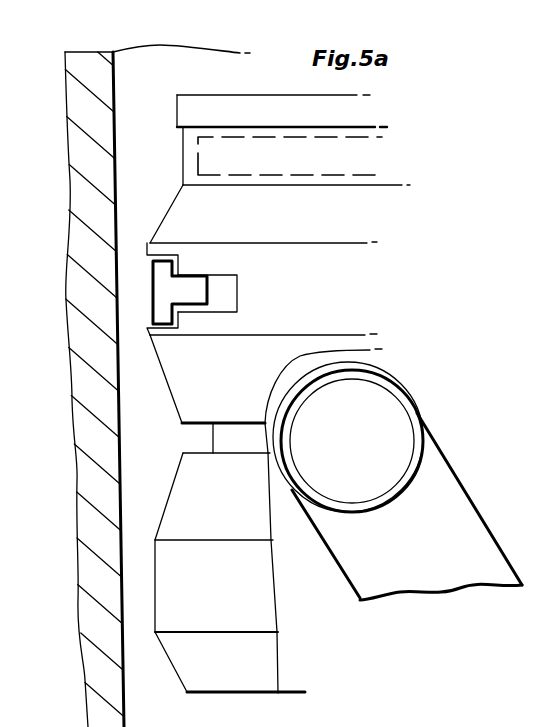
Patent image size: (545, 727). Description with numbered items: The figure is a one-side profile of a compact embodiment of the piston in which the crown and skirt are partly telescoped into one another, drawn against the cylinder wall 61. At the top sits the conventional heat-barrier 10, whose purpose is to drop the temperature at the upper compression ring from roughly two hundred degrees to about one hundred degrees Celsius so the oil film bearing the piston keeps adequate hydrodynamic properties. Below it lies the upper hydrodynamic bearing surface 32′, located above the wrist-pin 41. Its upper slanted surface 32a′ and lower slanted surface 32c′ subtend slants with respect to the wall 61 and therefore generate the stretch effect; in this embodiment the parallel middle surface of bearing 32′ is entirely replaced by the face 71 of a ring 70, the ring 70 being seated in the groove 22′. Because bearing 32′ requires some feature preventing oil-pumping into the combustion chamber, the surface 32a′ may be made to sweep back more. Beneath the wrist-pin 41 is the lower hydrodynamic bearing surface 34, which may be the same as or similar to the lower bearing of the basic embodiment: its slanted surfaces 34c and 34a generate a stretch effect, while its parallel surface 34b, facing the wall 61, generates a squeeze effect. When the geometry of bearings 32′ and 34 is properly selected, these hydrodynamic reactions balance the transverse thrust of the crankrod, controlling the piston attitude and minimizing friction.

The cylinder wall 61 is at (115, 83).
The heat-barrier 10 is at (331, 163).
The upper slanted hydrodynamic bearing surface 32a′ is at (165, 212).
The face of ring 71 is at (150, 267).
The ring 70 is at (193, 288).
The groove 22′ is at (232, 293).
The upper hydrodynamic bearing surface 32′ is at (230, 368).
The lower slanted surface of upper bearing 32c′ is at (180, 422).
The wrist-pin 41 is at (408, 397).
The lower hydrodynamic bearing surface 34 is at (231, 511).
The upper slanted surface of lower bearing 34c is at (168, 498).
The parallel surface of lower bearing 34b is at (153, 597).
The lower slanted surface of lower bearing 34a is at (173, 670).